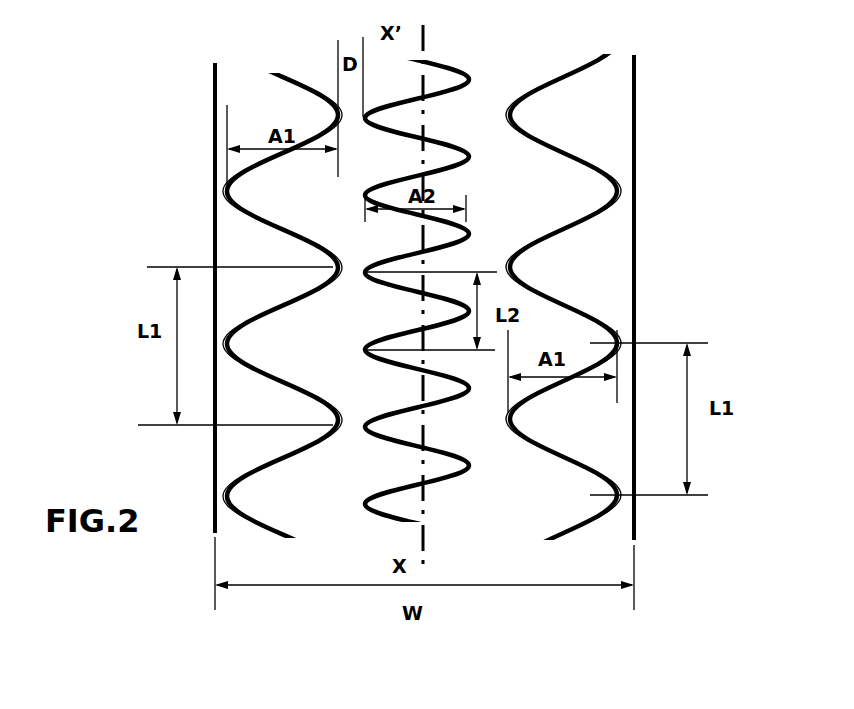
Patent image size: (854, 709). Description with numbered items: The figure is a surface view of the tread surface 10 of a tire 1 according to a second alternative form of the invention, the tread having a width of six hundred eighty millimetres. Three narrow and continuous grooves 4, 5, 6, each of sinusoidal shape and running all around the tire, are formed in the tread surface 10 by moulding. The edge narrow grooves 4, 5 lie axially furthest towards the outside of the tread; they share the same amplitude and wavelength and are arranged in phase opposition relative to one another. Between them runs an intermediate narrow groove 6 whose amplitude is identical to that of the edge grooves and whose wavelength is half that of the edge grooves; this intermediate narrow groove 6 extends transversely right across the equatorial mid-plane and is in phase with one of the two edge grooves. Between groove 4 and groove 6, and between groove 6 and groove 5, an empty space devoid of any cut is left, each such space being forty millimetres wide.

The tire 1 is at (184, 172).
The edge narrow groove 4 is at (298, 245).
The edge narrow groove 5 is at (585, 158).
The intermediate narrow groove 6 is at (458, 146).
The tread surface 10 is at (366, 299).